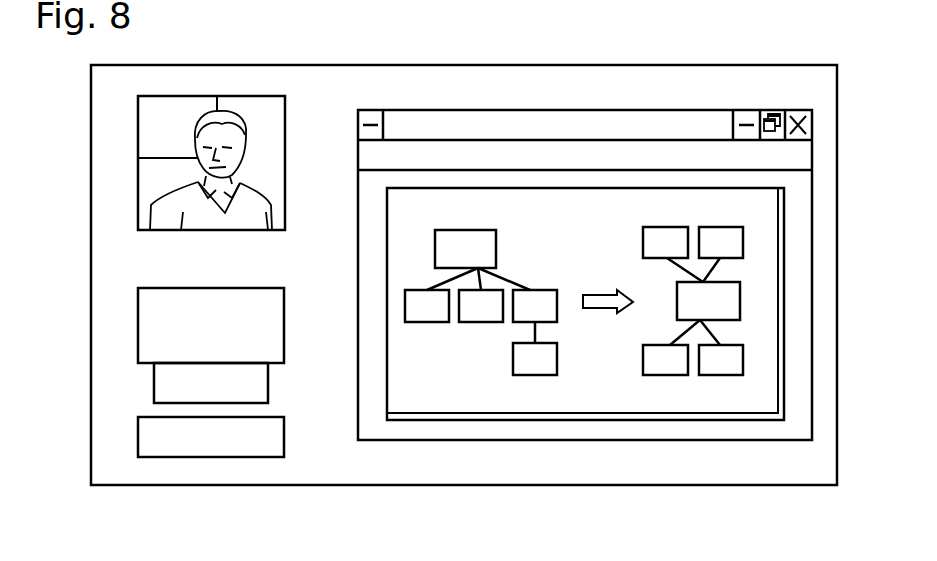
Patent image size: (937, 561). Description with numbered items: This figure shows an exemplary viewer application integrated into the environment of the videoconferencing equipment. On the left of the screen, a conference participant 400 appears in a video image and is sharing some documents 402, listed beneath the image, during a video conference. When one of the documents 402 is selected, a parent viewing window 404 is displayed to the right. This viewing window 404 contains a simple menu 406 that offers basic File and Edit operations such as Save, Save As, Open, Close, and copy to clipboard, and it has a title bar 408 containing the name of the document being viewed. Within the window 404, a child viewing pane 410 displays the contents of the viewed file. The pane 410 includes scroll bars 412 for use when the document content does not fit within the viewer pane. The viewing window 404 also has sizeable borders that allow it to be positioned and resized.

The conference participant 400 is at (138, 133).
The documents 402 is at (138, 332).
The parent viewing window 404 is at (812, 212).
The menu 406 is at (815, 153).
The title bar 408 is at (648, 122).
The child viewing pane 410 is at (455, 398).
The scroll bars 412 is at (782, 372).